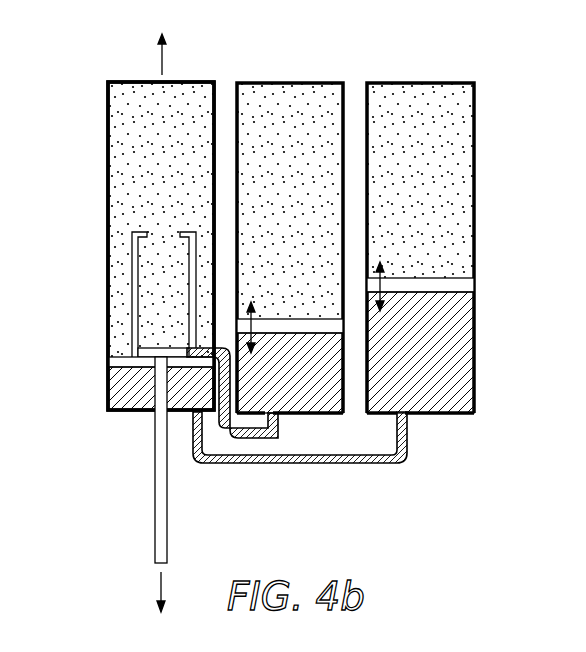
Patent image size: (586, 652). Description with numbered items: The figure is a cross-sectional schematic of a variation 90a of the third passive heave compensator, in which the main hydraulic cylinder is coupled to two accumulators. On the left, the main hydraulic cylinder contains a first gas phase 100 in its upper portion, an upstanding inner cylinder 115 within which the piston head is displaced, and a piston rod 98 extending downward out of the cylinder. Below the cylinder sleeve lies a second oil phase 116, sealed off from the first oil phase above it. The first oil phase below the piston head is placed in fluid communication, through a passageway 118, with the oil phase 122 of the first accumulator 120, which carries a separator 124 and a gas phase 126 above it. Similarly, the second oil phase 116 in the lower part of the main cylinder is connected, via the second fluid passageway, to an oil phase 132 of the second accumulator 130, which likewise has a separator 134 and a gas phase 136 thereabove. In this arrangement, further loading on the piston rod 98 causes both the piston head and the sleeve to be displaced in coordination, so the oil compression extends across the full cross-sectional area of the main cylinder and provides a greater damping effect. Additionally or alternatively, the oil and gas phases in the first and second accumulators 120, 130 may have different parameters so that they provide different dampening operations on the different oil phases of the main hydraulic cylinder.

The variation of the third passive heave compensator 90a is at (108, 70).
The first gas phase 100 is at (118, 153).
The upstanding inner cylinder 115 is at (133, 258).
The second oil phase 116 is at (120, 385).
The piston rod 98 is at (155, 548).
The first accumulator 120 is at (344, 188).
The passageway 118 is at (247, 463).
The gas phase 126 is at (290, 93).
The separator 124 is at (288, 325).
The oil phase 122 is at (315, 402).
The second accumulator 130 is at (475, 188).
The gas phase 136 is at (470, 136).
The separator 134 is at (465, 284).
The oil phase 132 is at (465, 342).